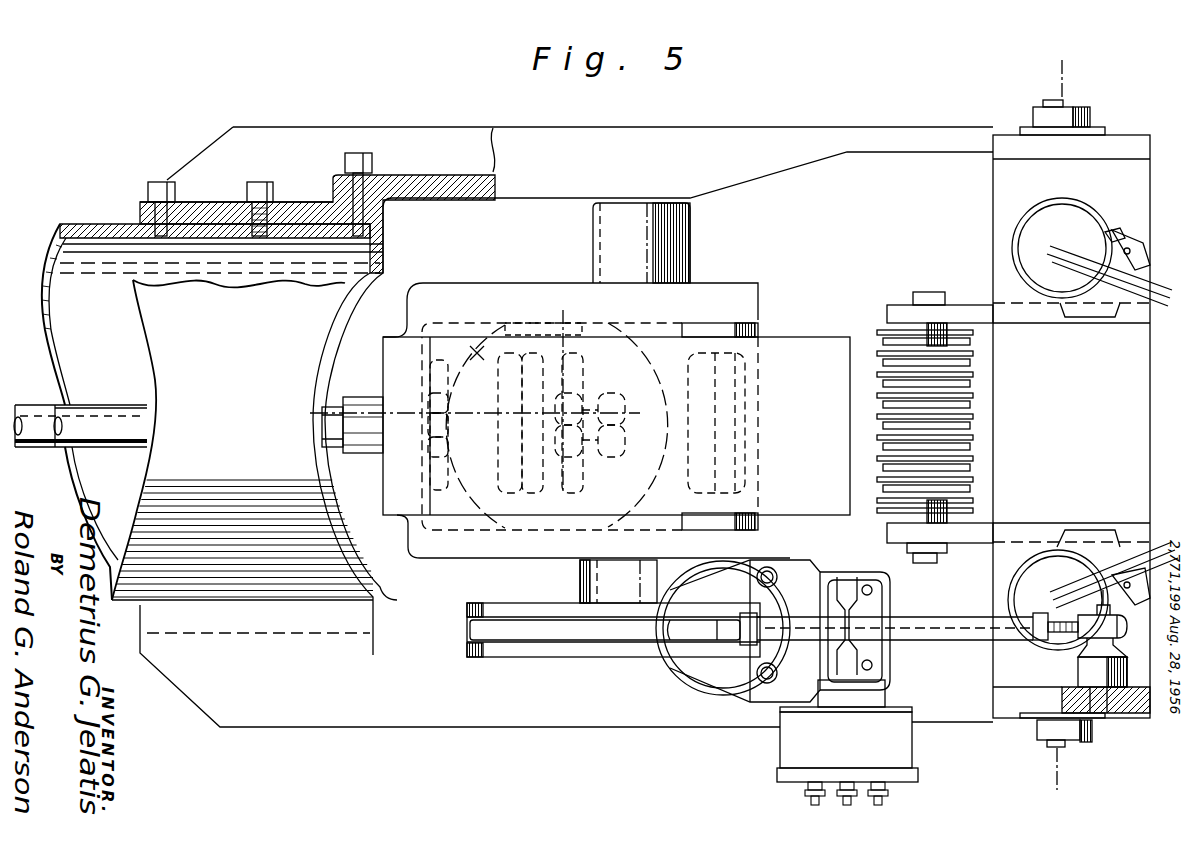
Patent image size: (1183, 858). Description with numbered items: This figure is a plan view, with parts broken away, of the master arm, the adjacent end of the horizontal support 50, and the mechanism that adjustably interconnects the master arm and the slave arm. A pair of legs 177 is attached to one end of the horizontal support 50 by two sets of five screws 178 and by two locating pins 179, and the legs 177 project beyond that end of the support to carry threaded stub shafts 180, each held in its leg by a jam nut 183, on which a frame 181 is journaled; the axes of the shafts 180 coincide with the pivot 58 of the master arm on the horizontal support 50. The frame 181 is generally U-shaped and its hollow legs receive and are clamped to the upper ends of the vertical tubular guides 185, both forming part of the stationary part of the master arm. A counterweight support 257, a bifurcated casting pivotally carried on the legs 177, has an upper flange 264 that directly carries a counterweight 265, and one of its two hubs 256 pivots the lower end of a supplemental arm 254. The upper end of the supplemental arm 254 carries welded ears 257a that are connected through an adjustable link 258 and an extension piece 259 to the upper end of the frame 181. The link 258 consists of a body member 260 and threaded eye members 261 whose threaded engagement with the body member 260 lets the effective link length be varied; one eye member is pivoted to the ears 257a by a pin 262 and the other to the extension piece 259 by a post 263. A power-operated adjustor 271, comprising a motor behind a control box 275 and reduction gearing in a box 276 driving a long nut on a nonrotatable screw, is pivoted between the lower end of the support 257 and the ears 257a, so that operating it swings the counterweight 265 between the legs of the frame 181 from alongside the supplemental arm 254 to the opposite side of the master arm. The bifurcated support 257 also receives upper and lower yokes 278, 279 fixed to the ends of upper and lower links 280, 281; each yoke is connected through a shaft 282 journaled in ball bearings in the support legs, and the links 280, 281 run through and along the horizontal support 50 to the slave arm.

The horizontal support 50 is at (72, 341).
The pivot 58 is at (1065, 66).
The legs 177 is at (600, 112).
The screws 178 is at (160, 190).
The locating pins 179 is at (142, 214).
The threaded stub shafts 180 is at (1042, 100).
The frame 181 is at (1015, 182).
The jam nut 183 is at (1085, 113).
The vertical tubular guides 185 is at (1012, 246).
The supplemental arm 254 is at (550, 630).
The hubs 256 is at (672, 242).
The counterweight support 257 is at (610, 240).
The ears 257a is at (465, 650).
The adjustable link 258 is at (912, 660).
The extension piece 259 is at (1012, 150).
The body member 260 is at (914, 648).
The threaded eye members 261 is at (685, 631).
The pin 262 is at (690, 650).
The post 263 is at (1082, 683).
The upper flange 264 is at (395, 480).
The counterweight 265 is at (812, 345).
The power-operated adjustor 271 is at (772, 774).
The control box 275 is at (795, 746).
The box 276 is at (800, 712).
The upper yoke 278 is at (745, 325).
The lower yoke 279 is at (474, 345).
The upper link 280 is at (62, 447).
The lower link 281 is at (44, 405).
The shaft 282 is at (552, 368).